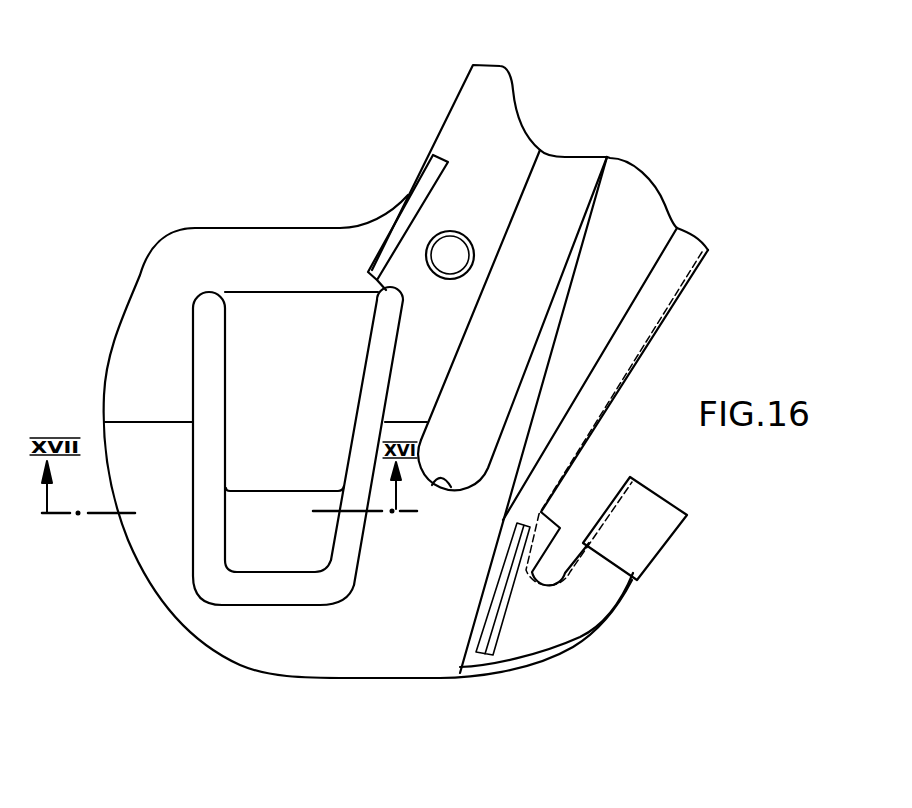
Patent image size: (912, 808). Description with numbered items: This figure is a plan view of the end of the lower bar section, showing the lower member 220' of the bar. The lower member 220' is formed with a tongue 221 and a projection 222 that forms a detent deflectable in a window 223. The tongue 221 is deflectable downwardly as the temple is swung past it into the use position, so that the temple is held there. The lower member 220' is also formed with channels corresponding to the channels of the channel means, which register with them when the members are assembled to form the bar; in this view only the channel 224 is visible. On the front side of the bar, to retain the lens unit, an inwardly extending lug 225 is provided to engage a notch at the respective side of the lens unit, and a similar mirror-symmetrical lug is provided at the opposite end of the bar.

The latch member 220' is at (487, 250).
The tongue 221 is at (243, 427).
The projection 222 is at (262, 547).
The window 223 is at (365, 527).
The channel 224 is at (451, 487).
The lug 225 is at (652, 540).